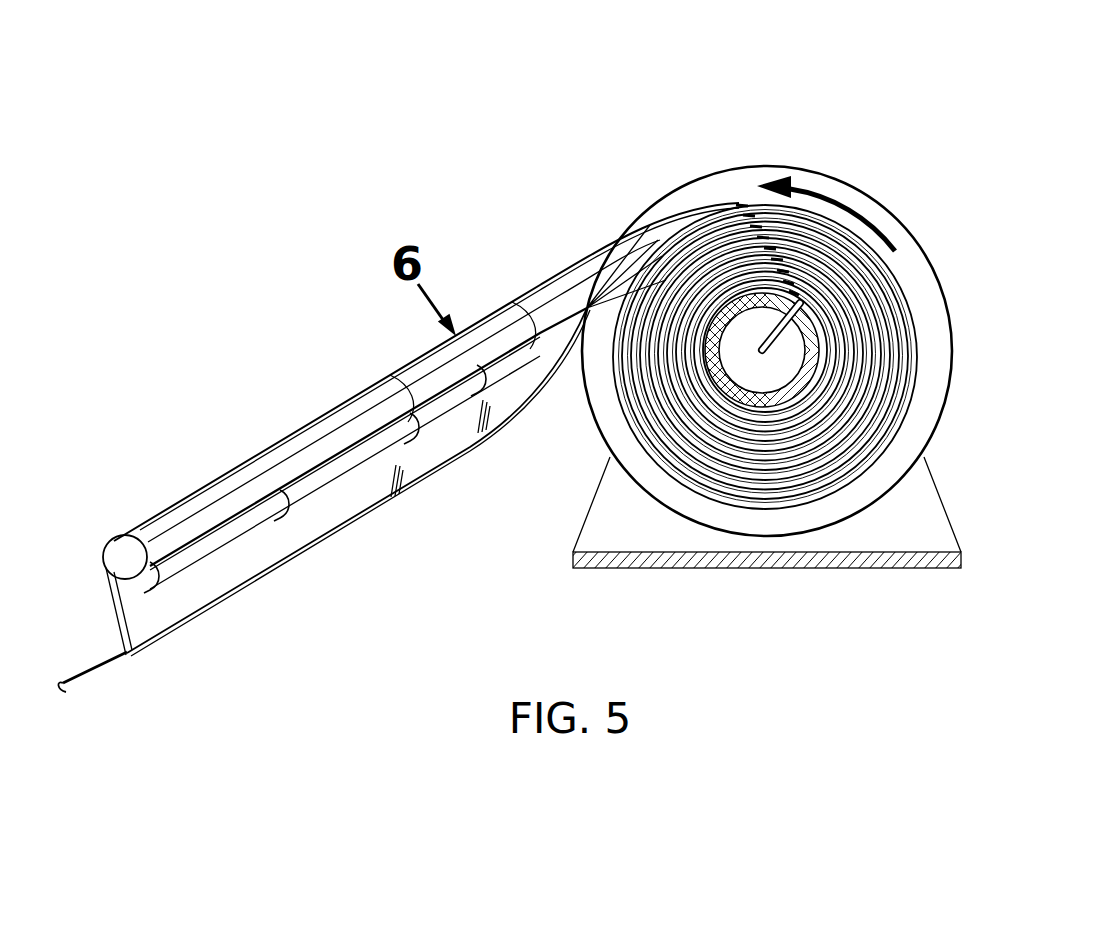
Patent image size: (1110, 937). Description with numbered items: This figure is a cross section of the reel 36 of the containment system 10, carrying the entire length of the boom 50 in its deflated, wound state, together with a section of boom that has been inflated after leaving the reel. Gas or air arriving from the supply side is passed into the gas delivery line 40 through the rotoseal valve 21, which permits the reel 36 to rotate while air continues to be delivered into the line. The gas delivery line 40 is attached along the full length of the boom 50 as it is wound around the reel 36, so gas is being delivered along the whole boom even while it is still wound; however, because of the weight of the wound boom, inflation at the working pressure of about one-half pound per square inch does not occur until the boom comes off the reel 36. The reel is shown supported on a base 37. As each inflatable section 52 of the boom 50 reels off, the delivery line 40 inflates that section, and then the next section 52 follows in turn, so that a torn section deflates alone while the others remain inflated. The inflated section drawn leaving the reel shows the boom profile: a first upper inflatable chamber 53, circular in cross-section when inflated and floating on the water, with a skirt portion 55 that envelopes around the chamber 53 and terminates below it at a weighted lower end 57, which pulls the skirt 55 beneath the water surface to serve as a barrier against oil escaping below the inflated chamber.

The containment system 10 is at (779, 142).
The rotoseal valve 21 is at (762, 332).
The reel 36 is at (925, 337).
The base support 37 is at (903, 510).
The gas delivery line 40 is at (280, 517).
The boom 50 is at (545, 232).
The inflatable section 52 is at (543, 318).
The upper inflatable chamber 53 is at (133, 568).
The skirt portion 55 is at (160, 608).
The weighted lower end 57 is at (246, 585).